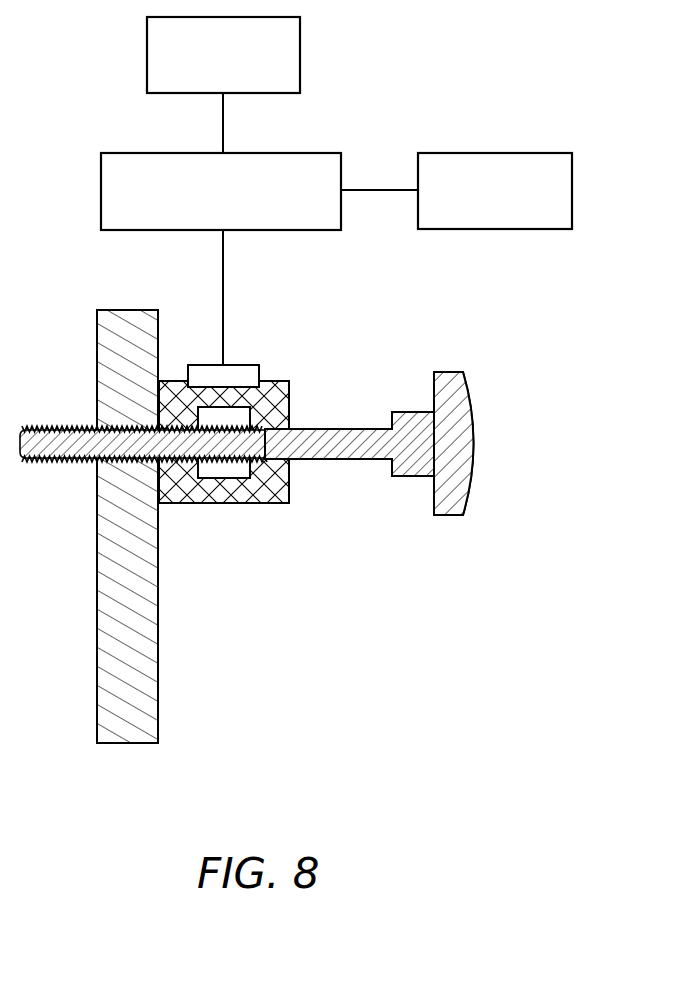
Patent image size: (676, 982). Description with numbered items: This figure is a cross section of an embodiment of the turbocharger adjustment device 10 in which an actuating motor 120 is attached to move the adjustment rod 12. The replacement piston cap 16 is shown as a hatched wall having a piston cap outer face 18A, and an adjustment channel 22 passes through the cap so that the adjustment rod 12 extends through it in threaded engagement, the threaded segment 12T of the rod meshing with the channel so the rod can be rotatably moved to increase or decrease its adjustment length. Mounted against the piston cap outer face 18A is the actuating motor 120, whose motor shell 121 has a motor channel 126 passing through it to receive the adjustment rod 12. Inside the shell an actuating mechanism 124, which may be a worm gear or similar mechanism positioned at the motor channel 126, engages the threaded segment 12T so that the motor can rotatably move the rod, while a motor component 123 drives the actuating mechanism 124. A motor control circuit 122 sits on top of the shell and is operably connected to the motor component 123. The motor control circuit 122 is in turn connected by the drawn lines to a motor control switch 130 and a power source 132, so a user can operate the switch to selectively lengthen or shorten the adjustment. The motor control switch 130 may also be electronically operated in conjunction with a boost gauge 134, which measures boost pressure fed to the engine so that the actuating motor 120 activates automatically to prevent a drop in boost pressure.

The turbocharger adjustment device 10 is at (418, 556).
The adjustment rod 12 is at (335, 428).
The threaded segment 12T is at (262, 462).
The replacement piston cap 16 is at (158, 507).
The piston cap outer face 18A is at (158, 697).
The adjustment channel 22 is at (130, 462).
The actuating motor 120 is at (238, 503).
The motor shell 121 is at (212, 503).
The motor control circuit 122 is at (230, 365).
The motor component 123 is at (237, 470).
The actuating mechanism 124 is at (273, 381).
The motor channel 126 is at (177, 460).
The motor control switch 130 is at (313, 153).
The power source 132 is at (484, 153).
The boost gauge 134 is at (147, 53).